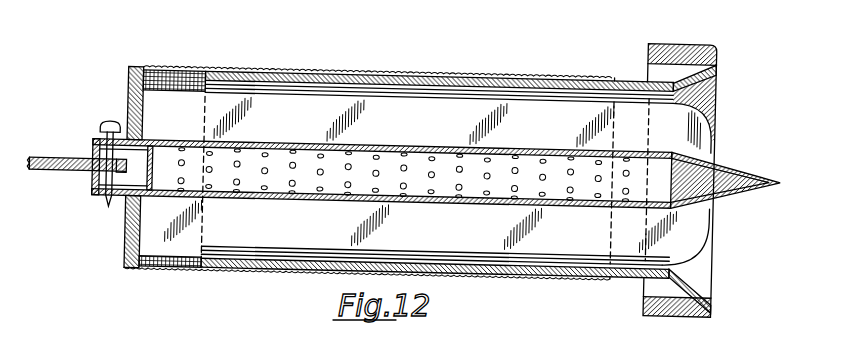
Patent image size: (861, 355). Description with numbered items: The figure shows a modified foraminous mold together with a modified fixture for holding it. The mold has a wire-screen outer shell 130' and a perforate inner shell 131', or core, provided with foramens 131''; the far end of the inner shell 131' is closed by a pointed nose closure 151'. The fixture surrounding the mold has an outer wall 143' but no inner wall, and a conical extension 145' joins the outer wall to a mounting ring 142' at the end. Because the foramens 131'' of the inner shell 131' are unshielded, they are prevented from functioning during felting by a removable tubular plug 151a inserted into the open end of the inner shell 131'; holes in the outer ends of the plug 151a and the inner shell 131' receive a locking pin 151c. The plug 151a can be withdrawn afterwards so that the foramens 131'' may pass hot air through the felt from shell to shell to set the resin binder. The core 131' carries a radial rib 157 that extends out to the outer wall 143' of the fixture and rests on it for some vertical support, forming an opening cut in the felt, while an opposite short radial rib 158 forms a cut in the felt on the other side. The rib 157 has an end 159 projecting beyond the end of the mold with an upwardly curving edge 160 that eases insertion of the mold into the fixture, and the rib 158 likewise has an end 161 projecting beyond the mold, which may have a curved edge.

The wire-screen outer shell 130' is at (369, 152).
The outer wall 143' is at (437, 158).
The radial rib 157 is at (300, 248).
The short radial rib 158 is at (377, 108).
The perforate inner shell 131' is at (382, 159).
The foramens 131'' is at (404, 190).
The removable tubular plug 151a is at (95, 178).
The locking pin 151c is at (106, 122).
The pointed nose closure 151' is at (726, 176).
The mounting ring 142' is at (679, 167).
The conical extension 145' is at (721, 102).
The end of rib 158 161 is at (700, 113).
The end of rib 157 159 is at (700, 221).
The upwardly curving edge 160 is at (680, 264).